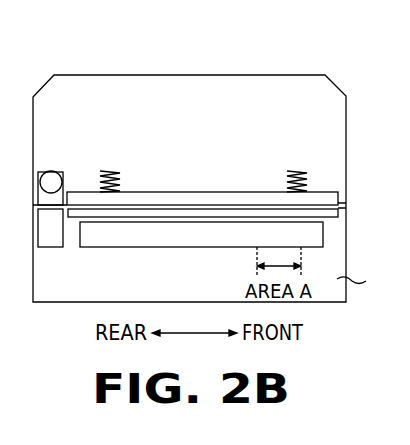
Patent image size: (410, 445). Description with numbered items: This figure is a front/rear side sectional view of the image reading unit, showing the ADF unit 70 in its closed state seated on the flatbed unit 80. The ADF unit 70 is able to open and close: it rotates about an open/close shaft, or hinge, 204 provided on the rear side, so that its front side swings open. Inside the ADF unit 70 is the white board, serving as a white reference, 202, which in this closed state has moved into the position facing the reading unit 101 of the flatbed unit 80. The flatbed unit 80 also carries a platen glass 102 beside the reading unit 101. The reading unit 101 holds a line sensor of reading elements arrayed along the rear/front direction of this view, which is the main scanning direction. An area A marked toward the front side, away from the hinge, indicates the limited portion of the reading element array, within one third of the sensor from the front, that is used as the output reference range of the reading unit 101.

The ADF unit 70 is at (308, 75).
The white board (white reference) 202 is at (187, 192).
The open/close shaft (hinge) 204 is at (52, 171).
The platen glass 102 is at (68, 217).
The reading unit 101 is at (180, 248).
The flatbed (FB) unit 80 is at (365, 281).